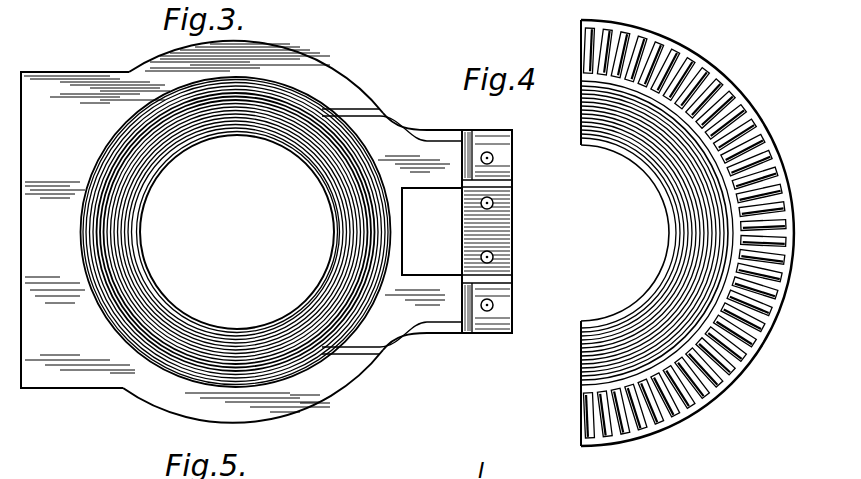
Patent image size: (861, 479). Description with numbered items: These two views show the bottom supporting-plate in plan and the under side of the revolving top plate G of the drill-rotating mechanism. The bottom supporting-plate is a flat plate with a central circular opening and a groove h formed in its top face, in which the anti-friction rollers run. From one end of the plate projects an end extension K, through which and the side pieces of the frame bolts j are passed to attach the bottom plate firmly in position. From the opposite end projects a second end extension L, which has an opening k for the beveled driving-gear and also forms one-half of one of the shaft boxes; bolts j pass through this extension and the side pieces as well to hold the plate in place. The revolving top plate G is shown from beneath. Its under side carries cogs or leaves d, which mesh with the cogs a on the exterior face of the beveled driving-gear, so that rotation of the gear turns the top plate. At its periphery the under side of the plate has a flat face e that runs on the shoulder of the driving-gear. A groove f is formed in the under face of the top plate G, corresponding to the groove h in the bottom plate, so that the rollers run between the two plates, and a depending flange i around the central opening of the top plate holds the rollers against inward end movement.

In FIG. 3, the end extension K is at (22, 237).
In FIG. 3, the groove h is at (115, 240).
In FIG. 3, the bolts j is at (257, 49).
In FIG. 3, the end extension L is at (446, 173).
In FIG. 3, the opening k is at (410, 246).
In FIG. 4, the revolving top plate G is at (680, 233).
In FIG. 4, the cogs or leaves d is at (757, 197).
In FIG. 4, the depending flange i is at (621, 156).
In FIG. 4, the groove f is at (693, 190).
In FIG. 4, the flat face e is at (783, 268).
In FIG. 4, the cogs a is at (743, 352).